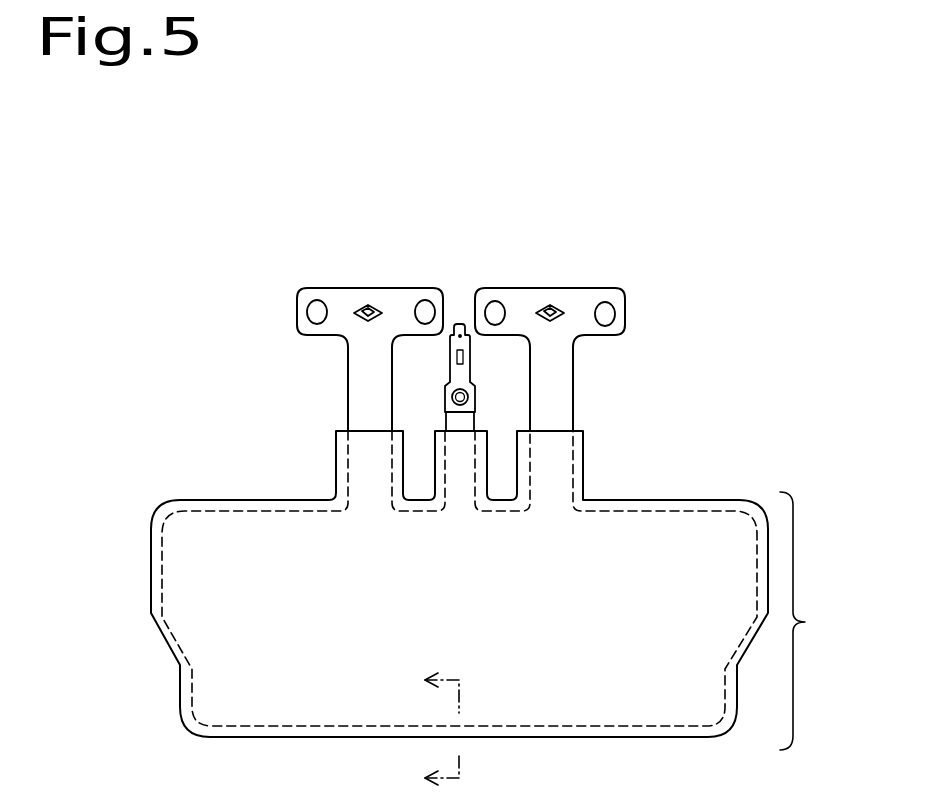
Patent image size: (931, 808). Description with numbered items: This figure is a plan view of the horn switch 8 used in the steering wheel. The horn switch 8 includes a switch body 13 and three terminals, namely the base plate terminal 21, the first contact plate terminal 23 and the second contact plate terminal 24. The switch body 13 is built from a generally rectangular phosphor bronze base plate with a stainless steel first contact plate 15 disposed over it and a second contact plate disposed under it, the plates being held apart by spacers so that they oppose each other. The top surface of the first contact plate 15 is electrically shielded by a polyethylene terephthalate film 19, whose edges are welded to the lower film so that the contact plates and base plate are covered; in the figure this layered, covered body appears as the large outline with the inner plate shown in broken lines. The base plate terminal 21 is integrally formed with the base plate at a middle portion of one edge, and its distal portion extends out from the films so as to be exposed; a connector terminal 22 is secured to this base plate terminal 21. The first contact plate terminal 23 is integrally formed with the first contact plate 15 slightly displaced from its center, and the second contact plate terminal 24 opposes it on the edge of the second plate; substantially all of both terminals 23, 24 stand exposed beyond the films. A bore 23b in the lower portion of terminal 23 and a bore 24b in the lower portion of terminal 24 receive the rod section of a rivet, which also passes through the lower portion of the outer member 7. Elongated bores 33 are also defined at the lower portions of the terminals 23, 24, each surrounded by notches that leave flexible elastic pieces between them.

The outer member 7 is at (428, 732).
The horn switch 8 is at (151, 483).
The switch body 13 is at (814, 621).
The first contact plate 15 is at (192, 706).
The film 19 is at (151, 604).
The base plate terminal 21 is at (445, 422).
The connector terminal 22 is at (470, 370).
The first contact plate terminal 23 is at (550, 405).
The bore 23b is at (613, 316).
The second contact plate terminal 24 is at (362, 406).
The bore 24b is at (311, 313).
The elongated bore 33 is at (368, 304).